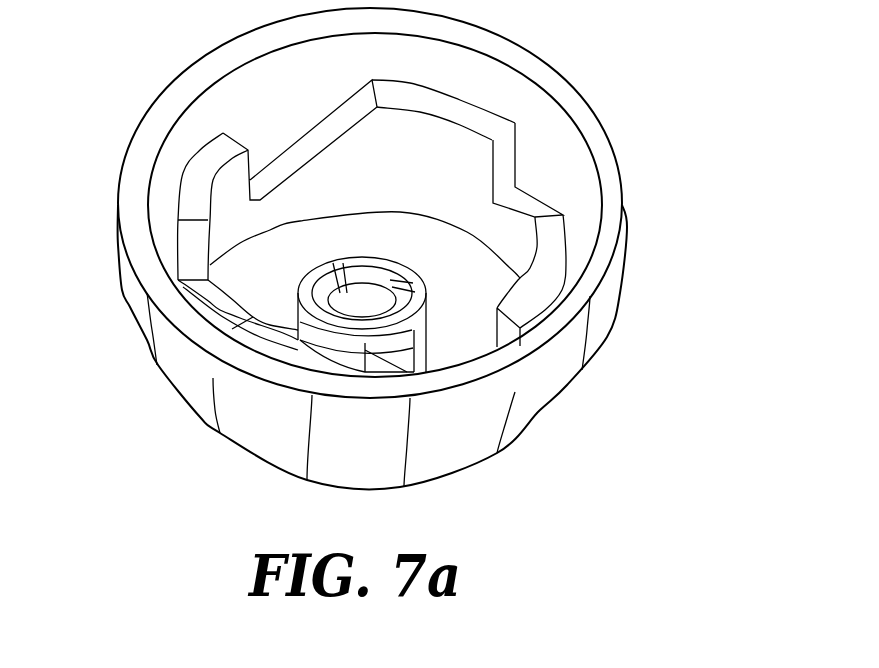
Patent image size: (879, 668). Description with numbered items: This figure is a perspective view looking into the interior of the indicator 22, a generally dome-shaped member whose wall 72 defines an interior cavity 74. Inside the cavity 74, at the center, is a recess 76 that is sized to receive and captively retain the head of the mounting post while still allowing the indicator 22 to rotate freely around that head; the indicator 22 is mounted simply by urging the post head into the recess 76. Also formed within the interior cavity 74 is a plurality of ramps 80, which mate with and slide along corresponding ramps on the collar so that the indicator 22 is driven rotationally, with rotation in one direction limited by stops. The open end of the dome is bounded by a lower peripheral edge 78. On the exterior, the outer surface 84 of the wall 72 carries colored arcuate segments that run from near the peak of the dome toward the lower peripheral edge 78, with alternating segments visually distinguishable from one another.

The indicator 22 is at (503, 33).
The wall 72 is at (588, 350).
The interior cavity 74 is at (296, 263).
The recess 76 is at (358, 320).
The lower peripheral edge 78 is at (163, 107).
The ramps 80 is at (313, 133).
The outer surface 84 is at (538, 400).